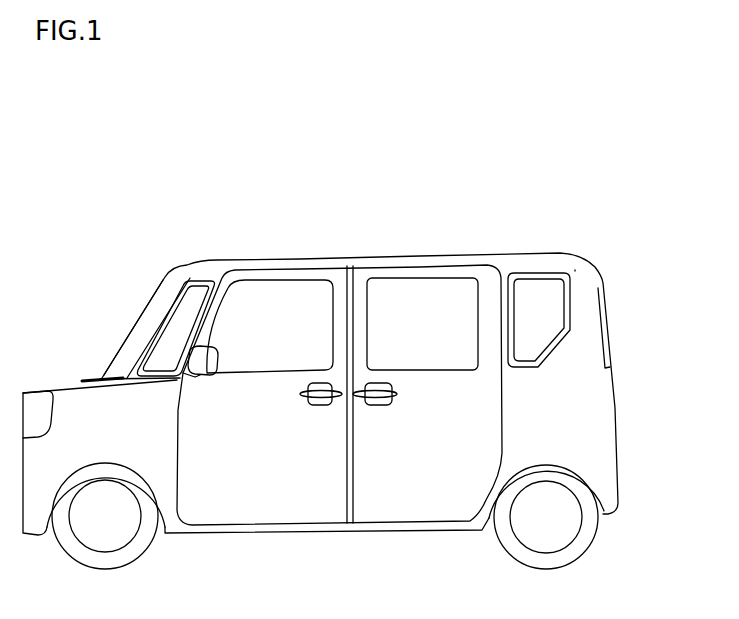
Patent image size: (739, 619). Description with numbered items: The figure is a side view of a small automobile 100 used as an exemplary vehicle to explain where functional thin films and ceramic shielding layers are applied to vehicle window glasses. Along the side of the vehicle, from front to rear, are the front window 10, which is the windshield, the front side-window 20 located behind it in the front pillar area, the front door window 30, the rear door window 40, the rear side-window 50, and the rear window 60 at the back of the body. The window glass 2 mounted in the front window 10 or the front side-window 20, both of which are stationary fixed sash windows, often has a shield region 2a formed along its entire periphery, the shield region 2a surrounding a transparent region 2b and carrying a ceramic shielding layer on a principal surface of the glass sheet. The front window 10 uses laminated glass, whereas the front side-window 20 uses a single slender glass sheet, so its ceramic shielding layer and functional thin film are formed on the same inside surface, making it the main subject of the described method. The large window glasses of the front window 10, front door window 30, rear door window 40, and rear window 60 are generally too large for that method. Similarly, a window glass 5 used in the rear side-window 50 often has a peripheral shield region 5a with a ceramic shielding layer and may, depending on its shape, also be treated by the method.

The automobile 100 is at (58, 178).
The front window 10 is at (145, 320).
The front side-window 20 is at (183, 323).
The window glass 2 is at (167, 352).
The shield region 2a is at (200, 287).
The transparent region 2b is at (208, 281).
The front door window 30 is at (291, 310).
The rear door window 40 is at (421, 305).
The rear side-window 50 is at (553, 312).
The shield region 5a is at (537, 312).
The window glass 5 is at (580, 297).
The rear window 60 is at (608, 320).